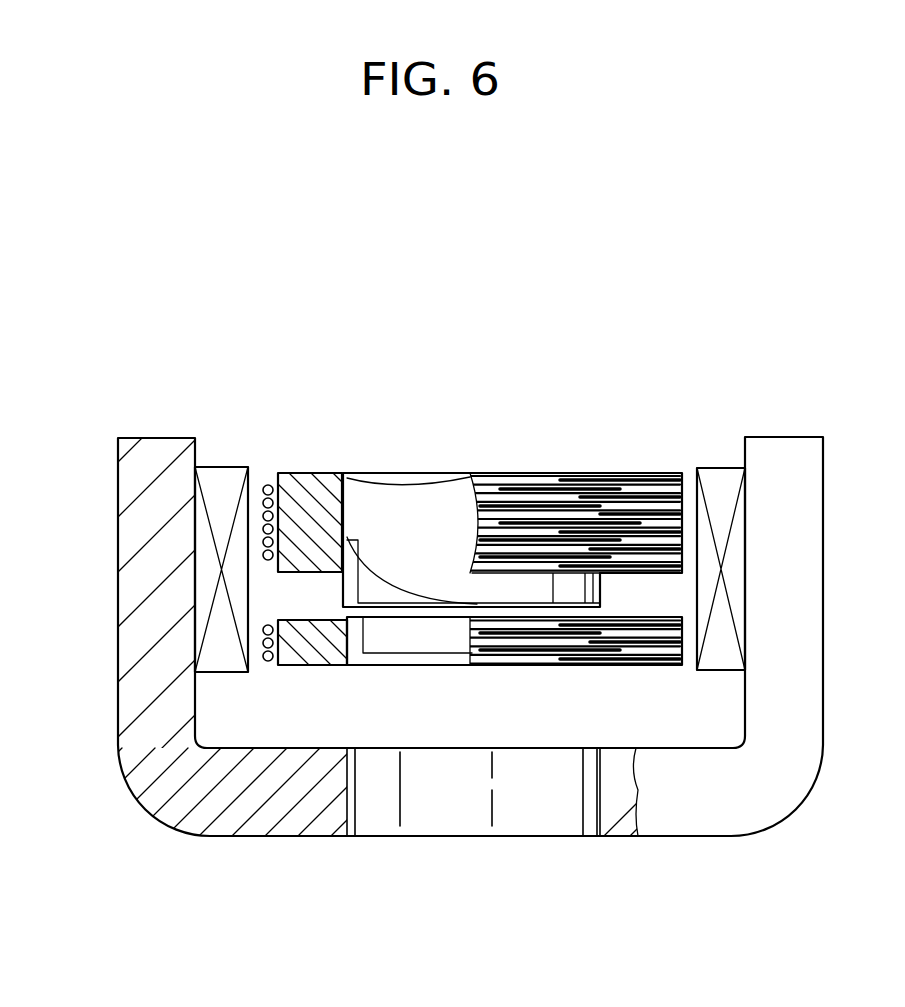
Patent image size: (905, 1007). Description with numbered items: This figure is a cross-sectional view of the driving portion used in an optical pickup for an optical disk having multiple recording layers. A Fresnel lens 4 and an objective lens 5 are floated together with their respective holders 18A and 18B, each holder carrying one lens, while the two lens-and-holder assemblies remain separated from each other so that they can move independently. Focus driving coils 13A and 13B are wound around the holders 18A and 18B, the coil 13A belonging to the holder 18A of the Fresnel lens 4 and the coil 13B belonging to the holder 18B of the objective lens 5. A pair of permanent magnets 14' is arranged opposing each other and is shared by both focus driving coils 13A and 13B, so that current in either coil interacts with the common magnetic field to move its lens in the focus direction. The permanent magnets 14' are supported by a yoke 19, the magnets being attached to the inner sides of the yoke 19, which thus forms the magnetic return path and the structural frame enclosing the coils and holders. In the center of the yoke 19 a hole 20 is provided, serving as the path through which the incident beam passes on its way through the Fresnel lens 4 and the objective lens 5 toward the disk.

The yoke 19 is at (142, 650).
The hole 20 is at (457, 818).
The permanent magnets 14' is at (186, 480).
The focus driving coil 13B is at (265, 483).
The holder 18B is at (313, 478).
The objective lens 5 is at (432, 483).
The focus driving coil 13A is at (270, 665).
The holder 18A is at (318, 665).
The Fresnel lens 4 is at (418, 635).